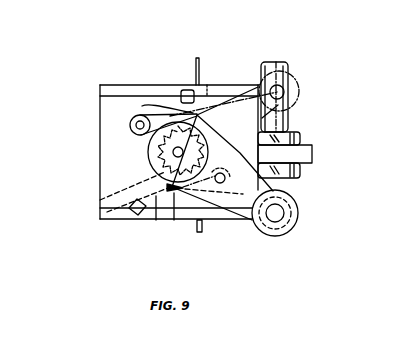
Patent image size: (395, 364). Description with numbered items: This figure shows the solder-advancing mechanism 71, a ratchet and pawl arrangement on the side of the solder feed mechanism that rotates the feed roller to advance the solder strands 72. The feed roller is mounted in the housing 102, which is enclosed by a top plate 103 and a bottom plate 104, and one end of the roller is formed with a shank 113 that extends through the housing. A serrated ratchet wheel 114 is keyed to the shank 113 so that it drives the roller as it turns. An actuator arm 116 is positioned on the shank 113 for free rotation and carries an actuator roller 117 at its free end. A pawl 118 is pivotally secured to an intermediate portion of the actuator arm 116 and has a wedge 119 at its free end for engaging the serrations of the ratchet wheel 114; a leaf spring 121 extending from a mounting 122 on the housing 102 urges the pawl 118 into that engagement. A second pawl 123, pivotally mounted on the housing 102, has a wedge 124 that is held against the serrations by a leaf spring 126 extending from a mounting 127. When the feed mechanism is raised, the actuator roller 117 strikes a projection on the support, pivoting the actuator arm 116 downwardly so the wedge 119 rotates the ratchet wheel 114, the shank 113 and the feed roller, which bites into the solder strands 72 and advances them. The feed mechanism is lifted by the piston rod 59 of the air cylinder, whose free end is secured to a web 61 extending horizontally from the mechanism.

The piston rod 59 is at (276, 62).
The web 61 is at (312, 153).
The solder-advancing mechanism 71 is at (92, 133).
The solder strands 72 is at (200, 60).
The housing 102 is at (101, 100).
The top plate 103 is at (101, 88).
The bottom plate 104 is at (112, 222).
The shank 113 is at (176, 153).
The serrated ratchet wheel 114 is at (100, 194).
The actuator arm 116 is at (238, 212).
The actuator roller 117 is at (284, 231).
The pawl 118 is at (174, 220).
The wedge 119 is at (102, 209).
The leaf spring 121 is at (156, 220).
The mounting 122 is at (138, 218).
The second pawl 123 is at (131, 117).
The wedge 124 is at (215, 97).
The leaf spring 126 is at (143, 106).
The mounting 127 is at (190, 89).